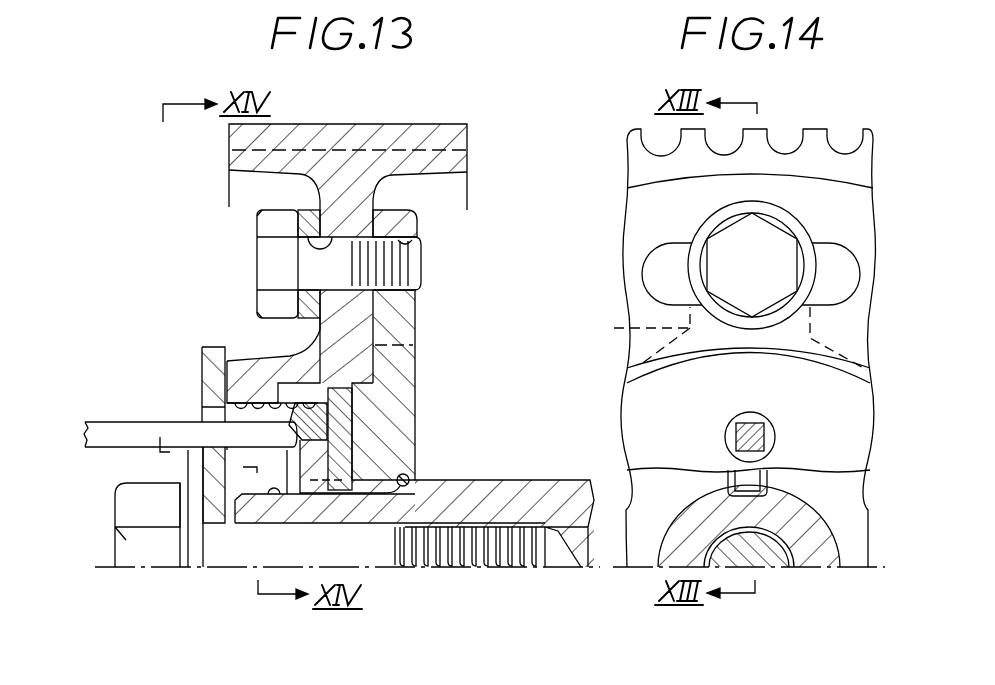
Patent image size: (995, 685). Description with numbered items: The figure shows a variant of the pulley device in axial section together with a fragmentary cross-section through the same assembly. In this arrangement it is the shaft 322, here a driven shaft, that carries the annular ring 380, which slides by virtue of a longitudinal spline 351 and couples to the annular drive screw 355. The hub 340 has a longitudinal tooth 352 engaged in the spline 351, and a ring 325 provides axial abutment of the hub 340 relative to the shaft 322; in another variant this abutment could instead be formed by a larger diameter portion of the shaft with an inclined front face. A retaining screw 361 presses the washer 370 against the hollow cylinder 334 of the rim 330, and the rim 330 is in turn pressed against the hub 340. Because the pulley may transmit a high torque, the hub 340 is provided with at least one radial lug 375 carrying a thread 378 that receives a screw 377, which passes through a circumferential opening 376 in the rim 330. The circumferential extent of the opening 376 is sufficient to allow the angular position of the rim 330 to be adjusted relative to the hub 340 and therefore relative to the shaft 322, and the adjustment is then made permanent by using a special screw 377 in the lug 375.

In FIG. 13, the shaft 322 is at (540, 470).
In FIG. 14, the shaft 322 is at (840, 522).
In FIG. 13, the ring 325 is at (409, 478).
In FIG. 13, the rim 330 is at (440, 180).
In FIG. 14, the rim 330 is at (613, 206).
In FIG. 13, the hollow cylinder 334 is at (247, 348).
In FIG. 13, the hub 340 is at (428, 364).
In FIG. 13, the longitudinal spline 351 is at (273, 498).
In FIG. 14, the longitudinal spline 351 is at (772, 480).
In FIG. 13, the longitudinal tooth 352 is at (380, 482).
In FIG. 13, the annular drive screw 355 is at (300, 384).
In FIG. 13, the retaining screw 361 is at (103, 522).
In FIG. 14, the retaining screw 361 is at (775, 573).
In FIG. 13, the washer 370 is at (190, 359).
In FIG. 14, the washer 370 is at (843, 404).
In FIG. 13, the radial lug 375 is at (415, 322).
In FIG. 14, the radial lug 375 is at (719, 338).
In FIG. 13, the circumferential opening 376 is at (302, 202).
In FIG. 14, the circumferential opening 376 is at (652, 260).
In FIG. 13, the screw 377 is at (247, 257).
In FIG. 14, the screw 377 is at (722, 230).
In FIG. 13, the thread 378 is at (417, 248).
In FIG. 13, the annular ring 380 is at (365, 422).
In FIG. 14, the annular ring 380 is at (715, 479).